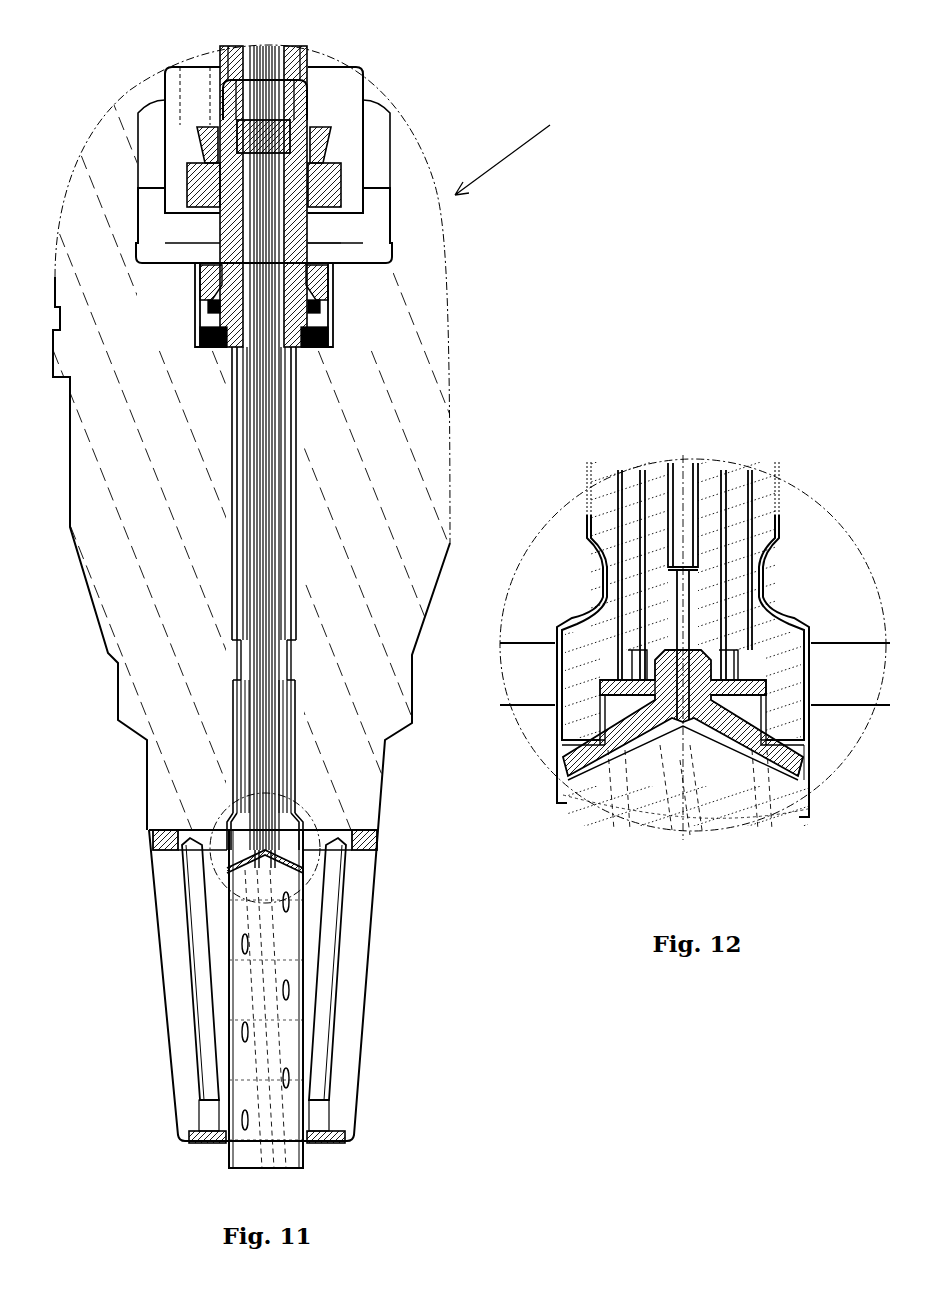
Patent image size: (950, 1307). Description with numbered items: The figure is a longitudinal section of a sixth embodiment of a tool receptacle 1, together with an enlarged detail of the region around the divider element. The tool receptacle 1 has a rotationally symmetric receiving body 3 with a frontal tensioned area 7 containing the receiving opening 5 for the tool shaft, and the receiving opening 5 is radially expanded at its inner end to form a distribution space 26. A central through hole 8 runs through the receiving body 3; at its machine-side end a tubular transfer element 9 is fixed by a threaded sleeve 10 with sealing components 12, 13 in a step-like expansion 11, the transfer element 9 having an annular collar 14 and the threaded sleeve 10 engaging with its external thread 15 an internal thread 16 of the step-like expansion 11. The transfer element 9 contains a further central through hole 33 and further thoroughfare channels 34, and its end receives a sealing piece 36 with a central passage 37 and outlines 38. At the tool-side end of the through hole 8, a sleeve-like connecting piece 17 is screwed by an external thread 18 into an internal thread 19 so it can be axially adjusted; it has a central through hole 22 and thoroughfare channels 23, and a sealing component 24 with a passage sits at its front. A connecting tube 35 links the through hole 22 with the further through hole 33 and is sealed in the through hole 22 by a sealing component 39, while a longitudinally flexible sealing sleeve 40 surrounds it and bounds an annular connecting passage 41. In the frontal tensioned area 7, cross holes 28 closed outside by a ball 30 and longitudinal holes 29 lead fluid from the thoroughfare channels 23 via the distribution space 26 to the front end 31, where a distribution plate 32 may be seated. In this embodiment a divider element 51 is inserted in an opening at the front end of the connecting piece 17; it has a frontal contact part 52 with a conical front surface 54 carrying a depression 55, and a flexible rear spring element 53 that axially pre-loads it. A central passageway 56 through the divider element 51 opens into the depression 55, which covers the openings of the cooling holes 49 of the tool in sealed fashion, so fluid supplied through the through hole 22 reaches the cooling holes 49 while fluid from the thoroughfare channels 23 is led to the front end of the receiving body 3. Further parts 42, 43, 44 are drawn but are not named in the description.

In FIG. 11, the tool receptacle 1 is at (511, 152).
In FIG. 11, the receiving body 3 is at (398, 422).
In FIG. 11, the receiving opening 5 is at (233, 1004).
In FIG. 11, the frontal tensioned area 7 is at (352, 1018).
In FIG. 11, the central through hole 8 is at (290, 537).
In FIG. 11, the tubular transfer element 9 is at (297, 227).
In FIG. 11, the threaded sleeve 10 is at (340, 287).
In FIG. 11, the step-like expansion 11 is at (333, 333).
In FIG. 11, the sealing component 12 is at (197, 307).
In FIG. 11, the sealing component 13 is at (197, 347).
In FIG. 11, the annular collar 14 is at (207, 322).
In FIG. 11, the external thread 15 is at (337, 307).
In FIG. 11, the internal thread 16 is at (250, 265).
In FIG. 11, the sleeve-like connecting piece 17 is at (296, 718).
In FIG. 12, the sleeve-like connecting piece 17 is at (609, 511).
In FIG. 11, the external thread 18 is at (293, 679).
In FIG. 11, the internal thread 19 is at (296, 760).
In FIG. 12, the central through hole 22 is at (691, 596).
In FIG. 11, the thoroughfare channels 23 is at (240, 703).
In FIG. 12, the thoroughfare channels 23 is at (740, 497).
In FIG. 11, the sealing component 24 is at (293, 813).
In FIG. 12, the distribution space 26 is at (557, 764).
In FIG. 11, the cross holes 28 is at (331, 849).
In FIG. 12, the cross holes 28 is at (850, 657).
In FIG. 11, the longitudinal holes 29 is at (321, 1074).
In FIG. 11, the ball 30 is at (155, 835).
In FIG. 11, the front end 31 is at (345, 1148).
In FIG. 11, the distribution plate 32 is at (198, 1148).
In FIG. 11, the further central through hole 33 is at (300, 258).
In FIG. 11, the further thoroughfare channels 34 is at (340, 147).
In FIG. 11, the connecting tube 35 is at (261, 500).
In FIG. 11, the sealing piece 36 is at (322, 110).
In FIG. 11, the central passage 37 is at (237, 127).
In FIG. 11, the outlines 38 is at (290, 127).
In FIG. 11, the sealing component 39 is at (293, 640).
In FIG. 11, the sealing sleeve 40 is at (296, 426).
In FIG. 11, the connecting passage 41 is at (133, 157).
In FIG. 11, the channel 42 is at (197, 83).
In FIG. 11, the cap 43 is at (280, 80).
In FIG. 11, the rod top 44 is at (237, 83).
In FIG. 11, the cooling holes 49 is at (247, 916).
In FIG. 12, the cooling holes 49 is at (621, 802).
In FIG. 11, the divider element 51 is at (233, 860).
In FIG. 12, the divider element 51 is at (672, 680).
In FIG. 11, the frontal contact part 52 is at (307, 862).
In FIG. 12, the frontal contact part 52 is at (808, 750).
In FIG. 11, the rear spring element 53 is at (377, 837).
In FIG. 12, the rear spring element 53 is at (752, 680).
In FIG. 12, the conical front surface 54 is at (780, 755).
In FIG. 12, the depression 55 is at (653, 741).
In FIG. 12, the central passageway 56 is at (621, 703).